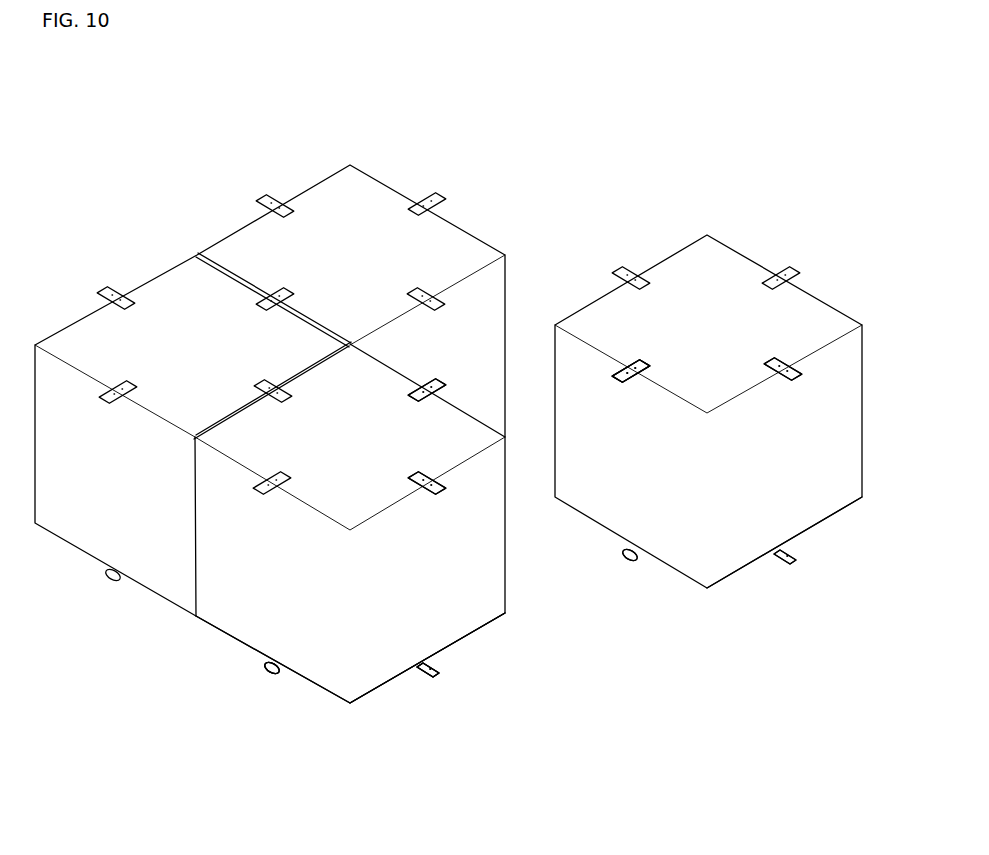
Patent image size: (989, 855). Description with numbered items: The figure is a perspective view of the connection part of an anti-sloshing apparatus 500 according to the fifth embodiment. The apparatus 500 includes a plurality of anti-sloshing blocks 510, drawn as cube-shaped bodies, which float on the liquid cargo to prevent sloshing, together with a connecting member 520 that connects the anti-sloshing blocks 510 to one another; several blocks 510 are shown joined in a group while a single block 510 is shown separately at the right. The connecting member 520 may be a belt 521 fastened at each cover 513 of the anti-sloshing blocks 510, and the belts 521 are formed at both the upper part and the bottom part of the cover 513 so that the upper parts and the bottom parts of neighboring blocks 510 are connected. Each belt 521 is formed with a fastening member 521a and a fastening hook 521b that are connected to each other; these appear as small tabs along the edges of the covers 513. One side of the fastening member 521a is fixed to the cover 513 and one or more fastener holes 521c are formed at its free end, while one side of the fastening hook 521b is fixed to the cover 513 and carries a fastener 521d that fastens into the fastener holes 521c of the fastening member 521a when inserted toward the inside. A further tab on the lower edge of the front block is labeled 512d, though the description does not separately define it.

The anti-sloshing apparatus 500 is at (222, 119).
The anti-sloshing block 510 is at (745, 241).
The coupling member 512d is at (262, 666).
The cover 513 is at (487, 622).
The connecting member 520 is at (355, 795).
The belt 521 is at (467, 150).
The fastening member 521a is at (429, 382).
The fastening hook 521b is at (622, 377).
The fastener hole 521c is at (434, 387).
The fastener 521d is at (623, 378).